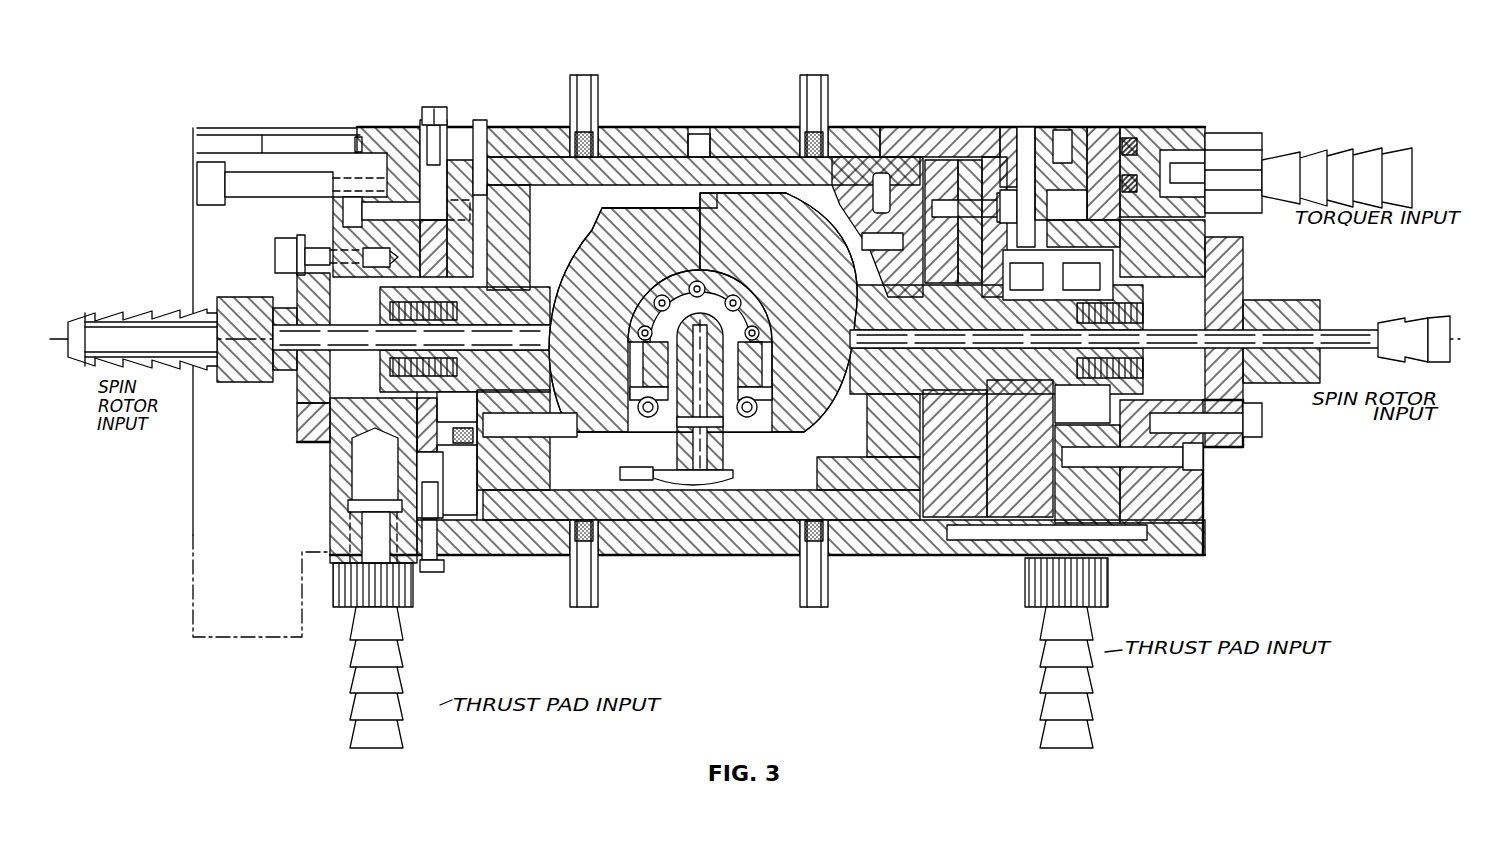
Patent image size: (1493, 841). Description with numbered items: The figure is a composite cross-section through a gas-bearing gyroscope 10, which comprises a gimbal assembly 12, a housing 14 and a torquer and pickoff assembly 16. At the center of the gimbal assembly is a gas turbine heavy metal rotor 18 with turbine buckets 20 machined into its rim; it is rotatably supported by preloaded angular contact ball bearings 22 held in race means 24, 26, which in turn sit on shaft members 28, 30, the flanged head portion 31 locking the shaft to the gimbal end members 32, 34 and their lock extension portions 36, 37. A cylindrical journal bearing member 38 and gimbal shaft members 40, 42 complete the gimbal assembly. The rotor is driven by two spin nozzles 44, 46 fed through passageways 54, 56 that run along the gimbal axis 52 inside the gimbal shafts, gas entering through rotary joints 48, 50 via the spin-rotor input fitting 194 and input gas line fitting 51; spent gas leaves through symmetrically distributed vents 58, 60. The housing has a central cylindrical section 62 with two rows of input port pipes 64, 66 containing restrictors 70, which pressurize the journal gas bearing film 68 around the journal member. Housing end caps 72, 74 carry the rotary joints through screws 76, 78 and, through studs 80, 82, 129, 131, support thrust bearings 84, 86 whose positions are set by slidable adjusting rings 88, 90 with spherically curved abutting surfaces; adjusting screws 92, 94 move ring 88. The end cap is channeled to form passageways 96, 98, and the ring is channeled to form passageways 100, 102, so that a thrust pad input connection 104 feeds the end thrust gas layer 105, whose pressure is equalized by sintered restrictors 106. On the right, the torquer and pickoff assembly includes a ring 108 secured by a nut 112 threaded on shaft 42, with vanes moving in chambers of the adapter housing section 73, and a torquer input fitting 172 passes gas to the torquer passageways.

The gyroscope 10 is at (920, 88).
The gimbal assembly 12 is at (758, 160).
The housing 14 is at (533, 125).
The torquer and pickoff assembly 16 is at (1025, 125).
The gas turbine heavy metal rotor 18 is at (676, 230).
The turbine buckets 20 is at (710, 197).
The preloaded angular contact ball bearings 22 is at (750, 284).
The race means 24 is at (682, 266).
The race means 26 is at (725, 266).
The shaft member 28 is at (728, 463).
The shaft member 30 is at (689, 451).
The flanged head portion 31 is at (740, 483).
The end member 32 is at (490, 219).
The end member 34 is at (895, 209).
The lock extension portion 36 is at (656, 470).
The lock extension portion 37 is at (839, 485).
The cylindrical journal bearing member 38 is at (774, 180).
The gimbal shaft member 40 is at (477, 315).
The gimbal shaft member 42 is at (867, 315).
The spin nozzle 44 is at (624, 320).
The spin nozzle 46 is at (778, 312).
The rotary joint 48 is at (335, 368).
The rotary joint 50 is at (1245, 285).
The input gas line fitting 51 is at (1382, 318).
The gimbal axis 52 is at (1425, 325).
The passageway 54 is at (429, 350).
The passageway 56 is at (969, 350).
The vents 58 is at (492, 378).
The vents 60 is at (899, 378).
The central cylindrical section 62 is at (872, 153).
The input port pipes 64 is at (600, 82).
The input port pipes 66 is at (830, 85).
The journal gas bearing film 68 is at (632, 152).
The restrictors 70 is at (596, 140).
The housing end cap 72 is at (416, 134).
The adapter housing section 73 is at (1113, 128).
The housing end cap 74 is at (1178, 130).
The screws 76 is at (277, 257).
The screws 78 is at (1263, 425).
The stud 80 is at (353, 207).
The stud 82 is at (1205, 468).
The thrust bearing 84 is at (471, 193).
The thrust bearing 86 is at (930, 193).
The slidable adjusting ring 88 is at (444, 192).
The slidable adjusting ring 90 is at (958, 190).
The adjusting screw 92 is at (433, 107).
The adjusting screw 94 is at (446, 570).
The passageway 96 is at (358, 471).
The passageway 98 is at (408, 451).
The passageway 100 is at (424, 486).
The passageway 102 is at (433, 452).
The thrust pad input connection 104 is at (405, 690).
The end thrust gas layer 105 is at (480, 190).
The restrictors 106 is at (478, 432).
The ring 108 is at (1009, 467).
The nut 112 is at (1068, 412).
The stud 129 is at (1062, 135).
The stud 131 is at (1018, 190).
The torquer input fitting 172 is at (1312, 150).
The spin-rotor input fitting 194 is at (103, 315).